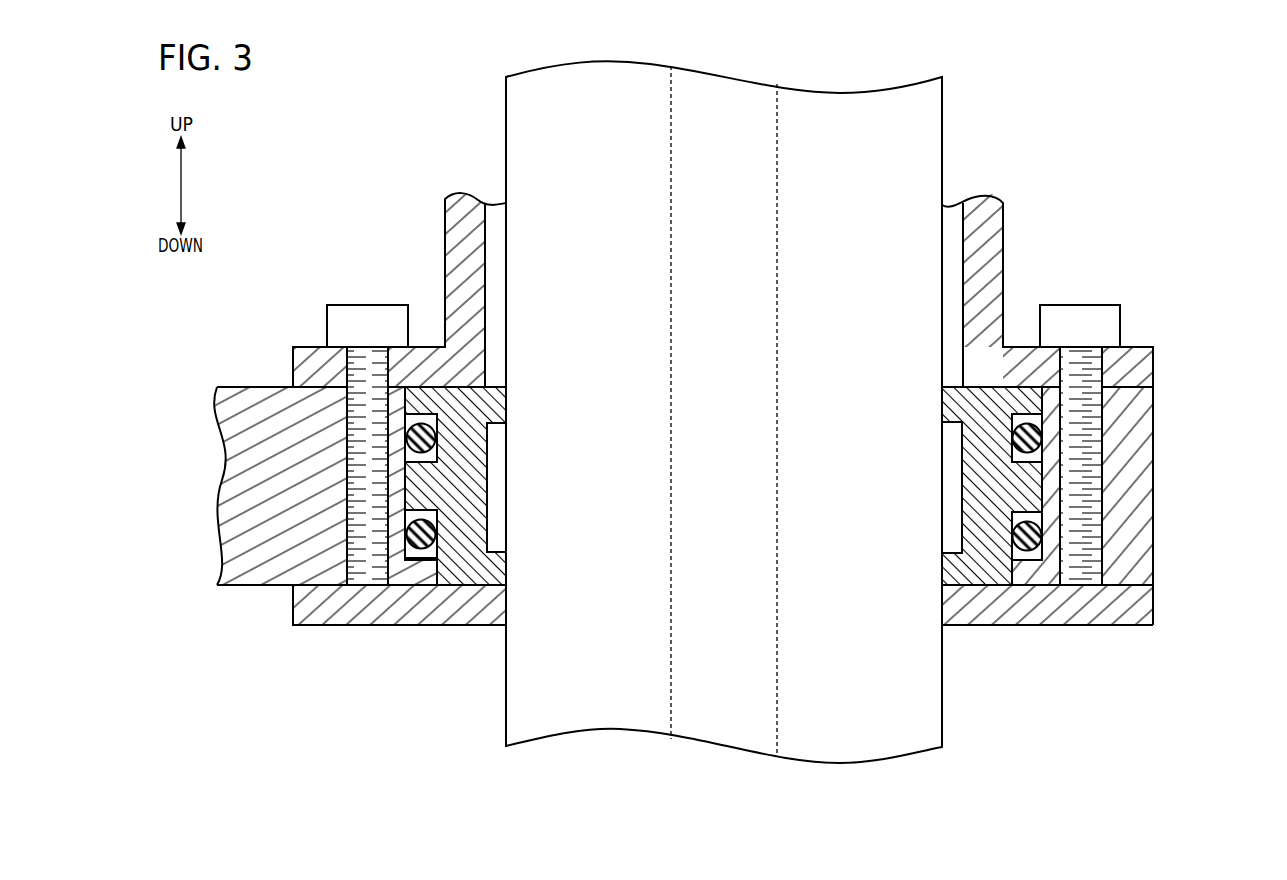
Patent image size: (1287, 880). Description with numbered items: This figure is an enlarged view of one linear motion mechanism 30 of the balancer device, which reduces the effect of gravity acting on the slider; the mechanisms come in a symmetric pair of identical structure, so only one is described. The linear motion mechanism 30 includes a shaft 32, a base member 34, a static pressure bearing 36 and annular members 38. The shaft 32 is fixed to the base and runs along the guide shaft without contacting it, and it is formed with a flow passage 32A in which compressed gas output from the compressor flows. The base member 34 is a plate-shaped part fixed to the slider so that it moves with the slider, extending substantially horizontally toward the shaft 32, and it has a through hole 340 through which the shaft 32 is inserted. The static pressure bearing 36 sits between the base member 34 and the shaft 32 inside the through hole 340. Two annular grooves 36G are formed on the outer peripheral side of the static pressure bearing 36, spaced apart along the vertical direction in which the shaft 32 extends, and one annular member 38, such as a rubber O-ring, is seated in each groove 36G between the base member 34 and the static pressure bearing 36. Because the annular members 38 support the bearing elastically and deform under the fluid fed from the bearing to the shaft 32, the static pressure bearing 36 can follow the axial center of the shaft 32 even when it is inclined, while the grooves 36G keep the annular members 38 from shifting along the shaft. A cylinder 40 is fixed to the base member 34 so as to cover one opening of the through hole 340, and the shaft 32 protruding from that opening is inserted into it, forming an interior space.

The linear motion mechanism 30 is at (1145, 260).
The shaft 32 is at (930, 696).
The flow passage 32A is at (728, 730).
The base member 34 is at (263, 568).
The through hole 340 is at (502, 634).
The static pressure bearing 36 is at (985, 575).
The groove 36G is at (410, 453).
The annular member 38 is at (417, 425).
The cylinder 40 is at (1143, 361).